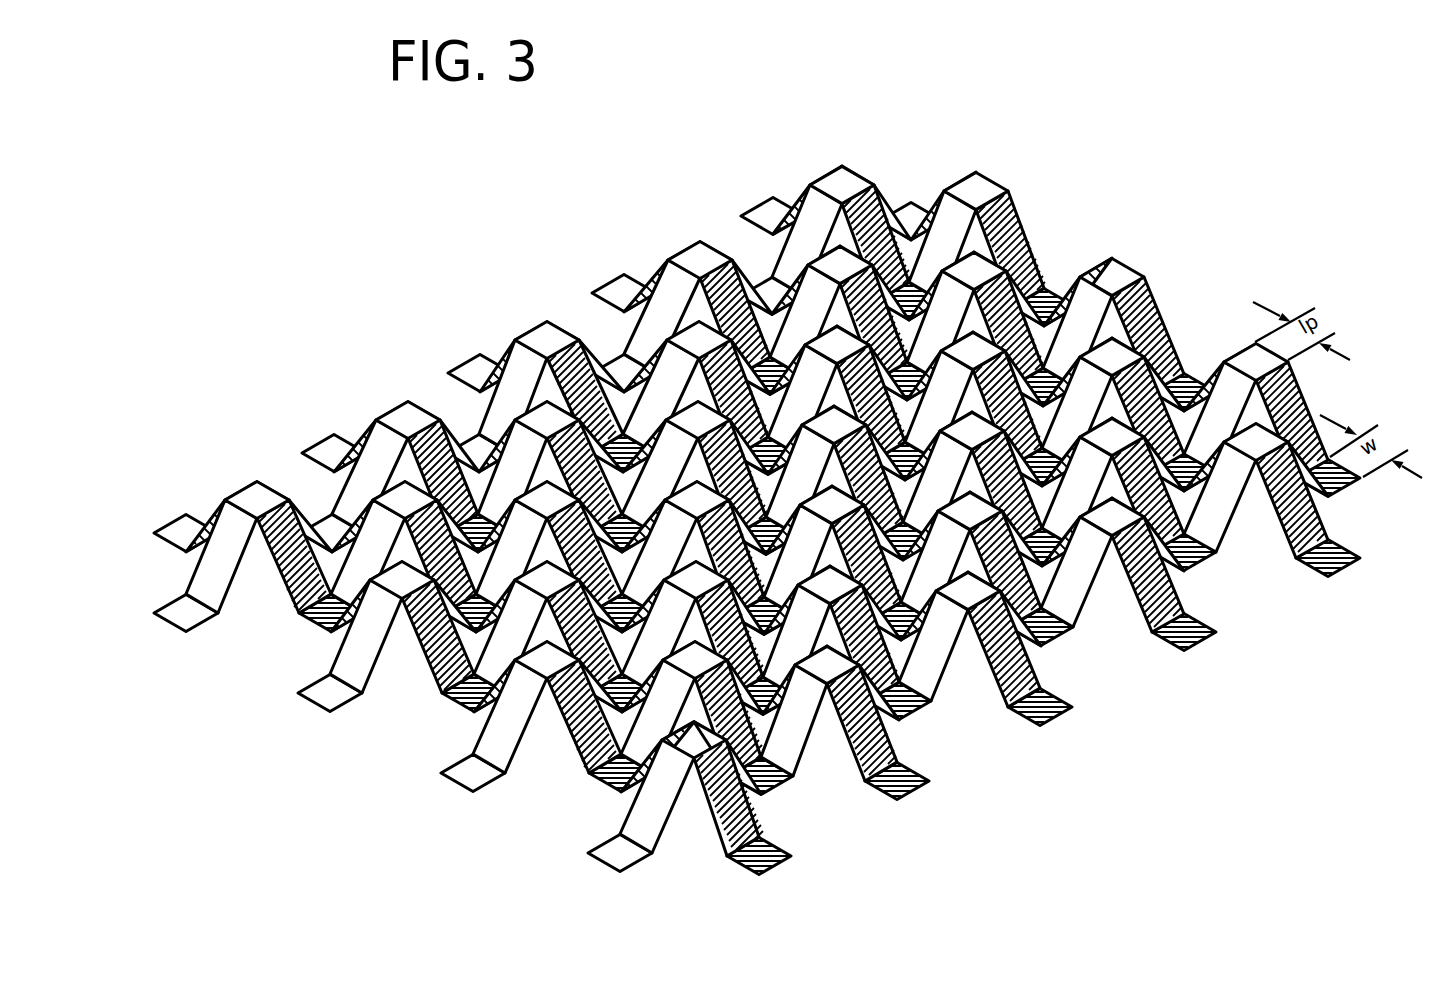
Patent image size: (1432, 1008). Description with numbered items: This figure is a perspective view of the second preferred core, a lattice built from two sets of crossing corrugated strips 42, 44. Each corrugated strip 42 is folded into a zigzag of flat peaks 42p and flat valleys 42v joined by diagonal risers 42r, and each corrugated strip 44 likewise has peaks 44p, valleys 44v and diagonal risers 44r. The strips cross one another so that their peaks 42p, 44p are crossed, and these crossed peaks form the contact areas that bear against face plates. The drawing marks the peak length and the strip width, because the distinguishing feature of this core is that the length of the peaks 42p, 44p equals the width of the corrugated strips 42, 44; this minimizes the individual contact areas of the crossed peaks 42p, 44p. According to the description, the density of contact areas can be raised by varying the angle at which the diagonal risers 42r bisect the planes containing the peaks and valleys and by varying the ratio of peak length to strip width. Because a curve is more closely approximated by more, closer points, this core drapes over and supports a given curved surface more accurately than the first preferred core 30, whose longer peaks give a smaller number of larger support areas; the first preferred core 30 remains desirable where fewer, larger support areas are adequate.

The first preferred core 30 is at (733, 514).
The corrugated strip 42 is at (169, 622).
The corrugated strip 44 is at (170, 515).
The peak 42p is at (696, 742).
The valley 42v is at (777, 785).
The diagonal riser 42r is at (1080, 573).
The peak 44p is at (988, 177).
The valley 44v is at (1047, 290).
The diagonal riser 44r is at (1010, 211).